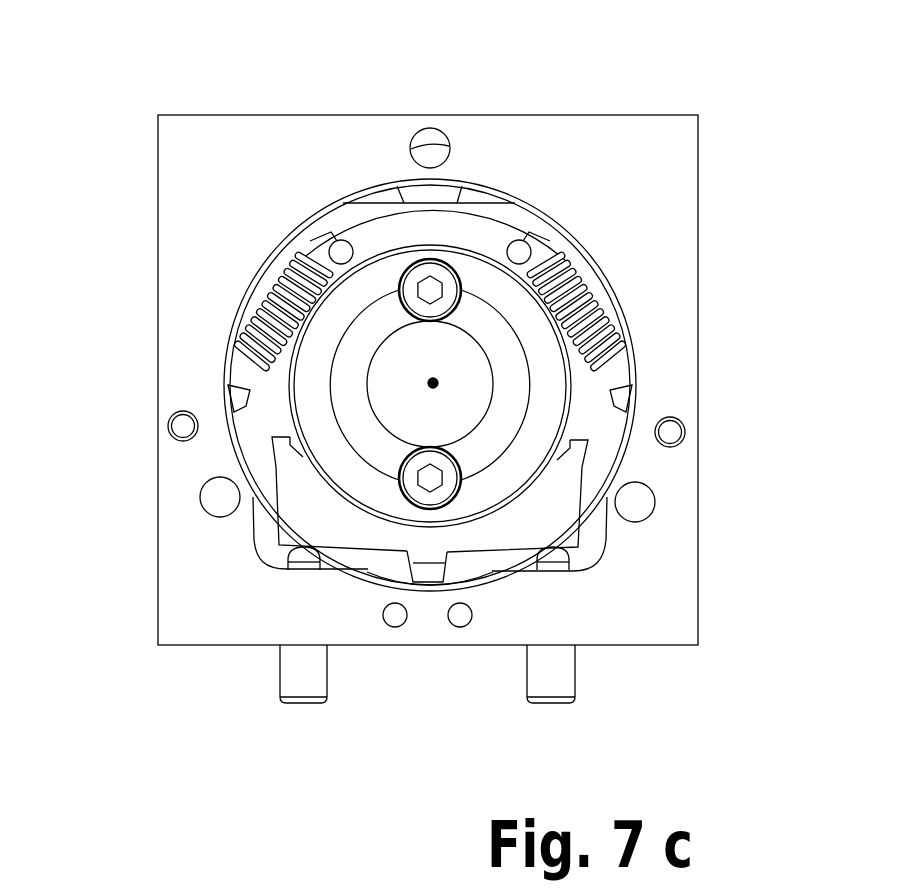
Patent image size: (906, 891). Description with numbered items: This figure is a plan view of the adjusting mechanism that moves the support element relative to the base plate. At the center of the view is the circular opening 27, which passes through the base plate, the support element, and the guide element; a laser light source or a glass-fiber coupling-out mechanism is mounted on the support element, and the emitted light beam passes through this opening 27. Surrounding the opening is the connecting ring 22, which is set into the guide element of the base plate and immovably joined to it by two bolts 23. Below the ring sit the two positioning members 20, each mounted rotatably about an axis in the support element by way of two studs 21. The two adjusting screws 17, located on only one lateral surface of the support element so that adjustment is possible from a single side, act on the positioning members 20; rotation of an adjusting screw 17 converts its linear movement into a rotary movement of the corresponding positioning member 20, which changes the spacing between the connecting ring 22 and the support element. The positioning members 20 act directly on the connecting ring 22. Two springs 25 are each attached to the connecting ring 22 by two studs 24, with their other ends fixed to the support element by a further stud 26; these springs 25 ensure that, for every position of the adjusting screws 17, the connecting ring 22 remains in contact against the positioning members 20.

The adjusting screws 17 is at (300, 673).
The positioning members 20 is at (310, 512).
The studs 21 is at (459, 627).
The connecting ring 22 is at (540, 387).
The bolts 23 is at (433, 278).
The studs 24 is at (328, 250).
The springs 25 is at (273, 303).
The stud 26 is at (168, 427).
The opening 27 is at (547, 508).